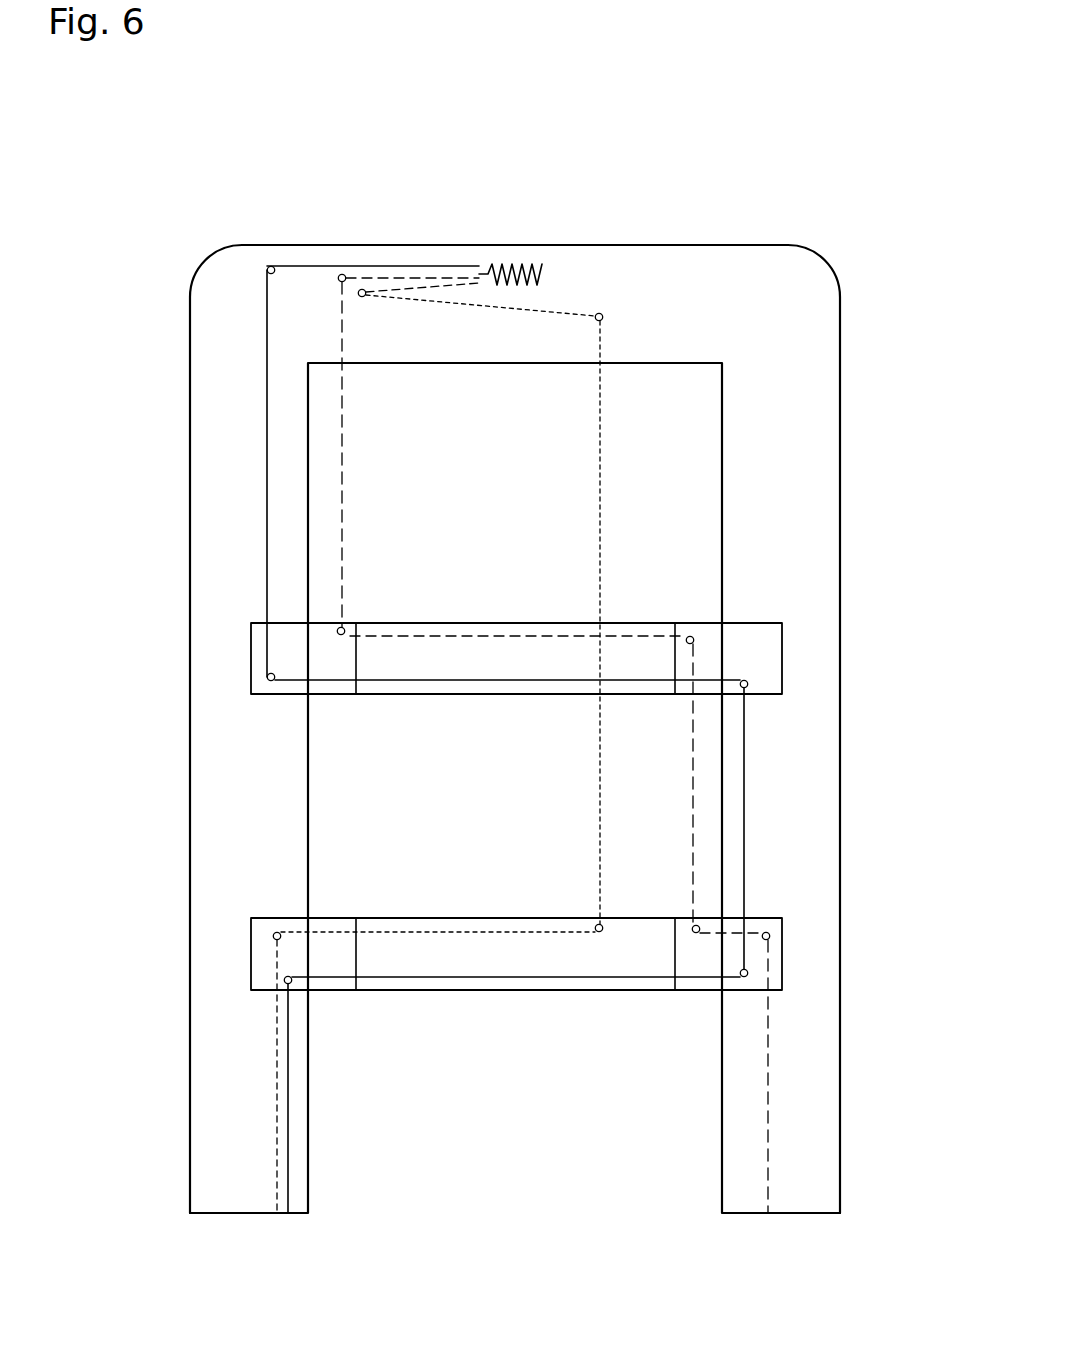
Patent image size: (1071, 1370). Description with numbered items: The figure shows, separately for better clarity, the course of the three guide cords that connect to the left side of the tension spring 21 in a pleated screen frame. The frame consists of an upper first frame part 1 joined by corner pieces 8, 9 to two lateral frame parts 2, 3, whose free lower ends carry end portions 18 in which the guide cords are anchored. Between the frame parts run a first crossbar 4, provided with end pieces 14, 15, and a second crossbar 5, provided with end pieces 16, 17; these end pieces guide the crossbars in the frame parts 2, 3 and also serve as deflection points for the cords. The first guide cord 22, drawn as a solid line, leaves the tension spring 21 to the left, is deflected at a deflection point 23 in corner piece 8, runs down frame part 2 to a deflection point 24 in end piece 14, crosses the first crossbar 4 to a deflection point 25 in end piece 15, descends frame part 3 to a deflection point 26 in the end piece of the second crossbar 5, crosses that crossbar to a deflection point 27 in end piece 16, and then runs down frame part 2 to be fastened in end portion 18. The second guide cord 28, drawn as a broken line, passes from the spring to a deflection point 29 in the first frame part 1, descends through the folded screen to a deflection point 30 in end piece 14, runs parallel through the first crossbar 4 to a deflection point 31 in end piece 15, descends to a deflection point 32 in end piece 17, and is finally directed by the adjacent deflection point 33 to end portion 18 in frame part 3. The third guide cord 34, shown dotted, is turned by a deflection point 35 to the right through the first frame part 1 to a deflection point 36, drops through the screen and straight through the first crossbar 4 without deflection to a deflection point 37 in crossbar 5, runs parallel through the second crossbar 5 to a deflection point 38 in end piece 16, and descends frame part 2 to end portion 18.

The first frame part 1 is at (685, 270).
The frame part 2 is at (213, 500).
The frame part 3 is at (808, 375).
The first crossbar 4 is at (446, 650).
The second crossbar 5 is at (446, 950).
The corner piece 8 is at (213, 297).
The corner piece 9 is at (791, 280).
The end piece 14 is at (253, 657).
The end piece 15 is at (765, 653).
The end piece 16 is at (260, 958).
The end piece 17 is at (778, 953).
The end portion 18 is at (210, 1213).
The tension spring 21 is at (510, 262).
The first guide cord 22 is at (265, 396).
The deflection point 23 is at (266, 270).
The deflection point 24 is at (268, 680).
The deflection point 25 is at (750, 685).
The deflection point 26 is at (748, 974).
The deflection point 27 is at (285, 982).
The second guide cord 28 is at (342, 506).
The deflection point 29 is at (342, 273).
The deflection point 30 is at (337, 631).
The deflection point 31 is at (695, 640).
The deflection point 32 is at (700, 926).
The deflection point 33 is at (770, 936).
The third guide cord 34 is at (603, 503).
The deflection point 35 is at (362, 288).
The deflection point 36 is at (605, 317).
The deflection point 37 is at (603, 922).
The deflection point 38 is at (272, 936).